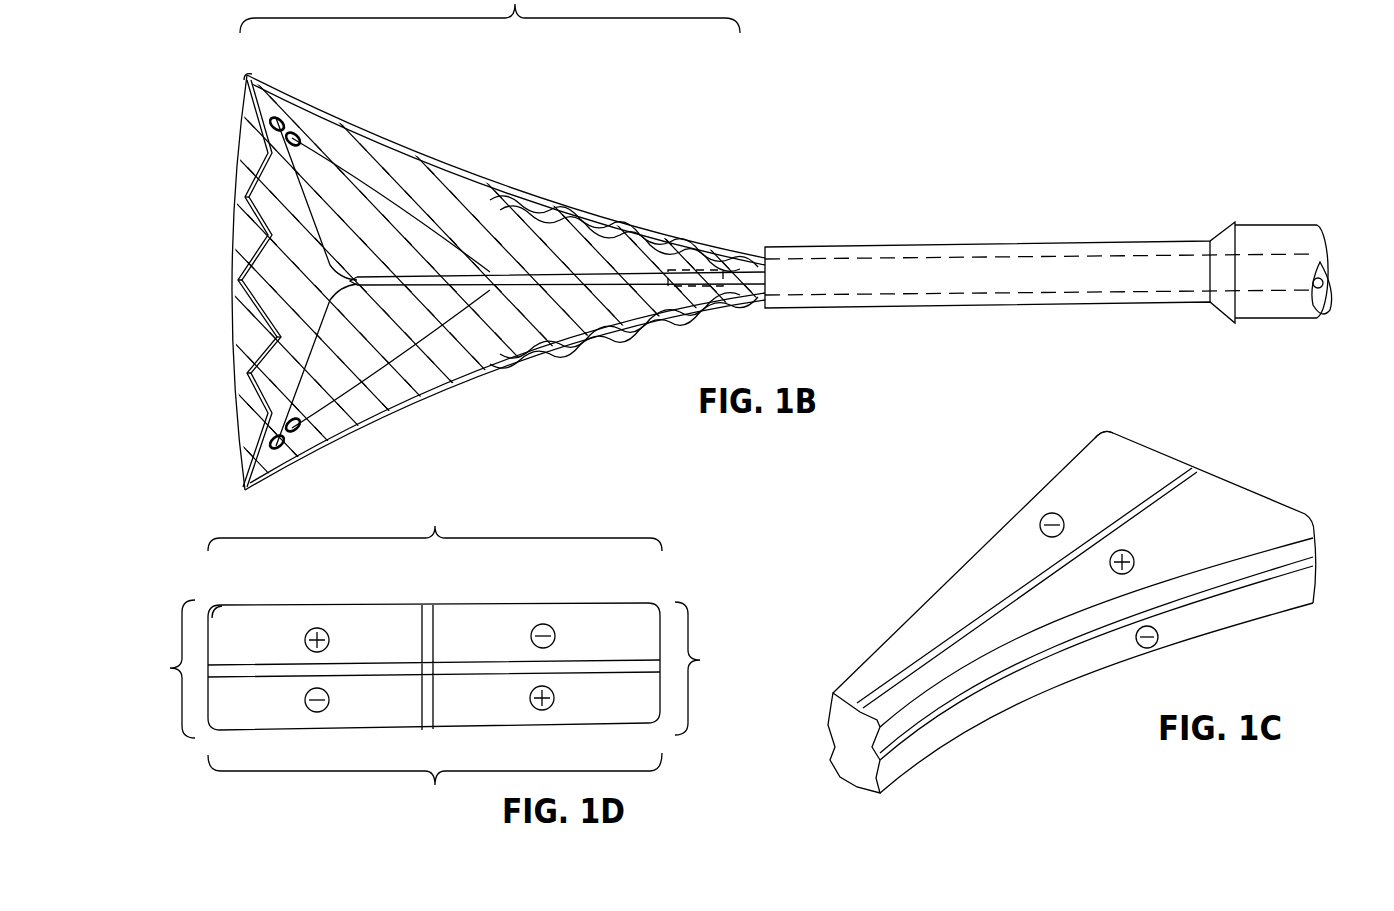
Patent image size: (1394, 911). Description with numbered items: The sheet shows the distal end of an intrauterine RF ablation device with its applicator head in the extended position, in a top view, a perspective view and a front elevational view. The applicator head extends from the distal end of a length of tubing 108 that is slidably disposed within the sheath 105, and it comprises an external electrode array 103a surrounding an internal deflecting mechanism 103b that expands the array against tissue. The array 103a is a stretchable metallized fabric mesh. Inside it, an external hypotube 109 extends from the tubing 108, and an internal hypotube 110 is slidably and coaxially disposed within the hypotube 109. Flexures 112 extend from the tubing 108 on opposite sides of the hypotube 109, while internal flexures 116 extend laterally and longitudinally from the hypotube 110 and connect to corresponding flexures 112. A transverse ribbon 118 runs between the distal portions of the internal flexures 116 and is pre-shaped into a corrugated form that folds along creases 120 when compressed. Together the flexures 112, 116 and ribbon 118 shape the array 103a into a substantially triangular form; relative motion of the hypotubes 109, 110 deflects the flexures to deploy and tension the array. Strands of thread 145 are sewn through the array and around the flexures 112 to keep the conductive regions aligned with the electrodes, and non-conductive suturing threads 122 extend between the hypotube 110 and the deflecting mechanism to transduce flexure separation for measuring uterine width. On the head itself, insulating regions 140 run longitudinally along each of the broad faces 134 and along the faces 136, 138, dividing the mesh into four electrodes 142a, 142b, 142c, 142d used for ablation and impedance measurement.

In FIG. 1B, the external electrode array 103a is at (250, 77).
In FIG. 1D, the external electrode array 103a is at (226, 603).
In FIG. 1C, the external electrode array 103a is at (1100, 430).
In FIG. 1B, the internal deflecting mechanism 103b is at (258, 157).
In FIG. 1B, the sheath 105 is at (1012, 240).
In FIG. 1B, the tubing 108 is at (868, 296).
In FIG. 1B, the external hypotube 109 is at (697, 267).
In FIG. 1B, the internal hypotube 110 is at (550, 273).
In FIG. 1B, the flexures 112 is at (463, 178).
In FIG. 1B, the internal flexures 116 is at (347, 168).
In FIG. 1B, the transverse ribbon 118 is at (277, 337).
In FIG. 1B, the creases 120 is at (240, 283).
In FIG. 1B, the suturing threads 122 is at (275, 210).
In FIG. 1D, the broad faces 134 is at (435, 658).
In FIG. 1C, the broad faces 134 is at (1229, 534).
In FIG. 1D, the face 136 is at (438, 669).
In FIG. 1C, the face 136 is at (1297, 588).
In FIG. 1D, the face 138 is at (505, 647).
In FIG. 1D, the insulating regions 140 is at (375, 660).
In FIG. 1C, the insulating regions 140 is at (895, 672).
In FIG. 1D, the electrode 142a is at (600, 635).
In FIG. 1C, the electrode 142a is at (1150, 452).
In FIG. 1D, the electrode 142b is at (270, 622).
In FIG. 1C, the electrode 142b is at (1265, 505).
In FIG. 1D, the electrode 142c is at (258, 707).
In FIG. 1C, the electrode 142c is at (1200, 618).
In FIG. 1D, the electrode 142d is at (622, 702).
In FIG. 1B, the strands of thread 145 is at (643, 250).